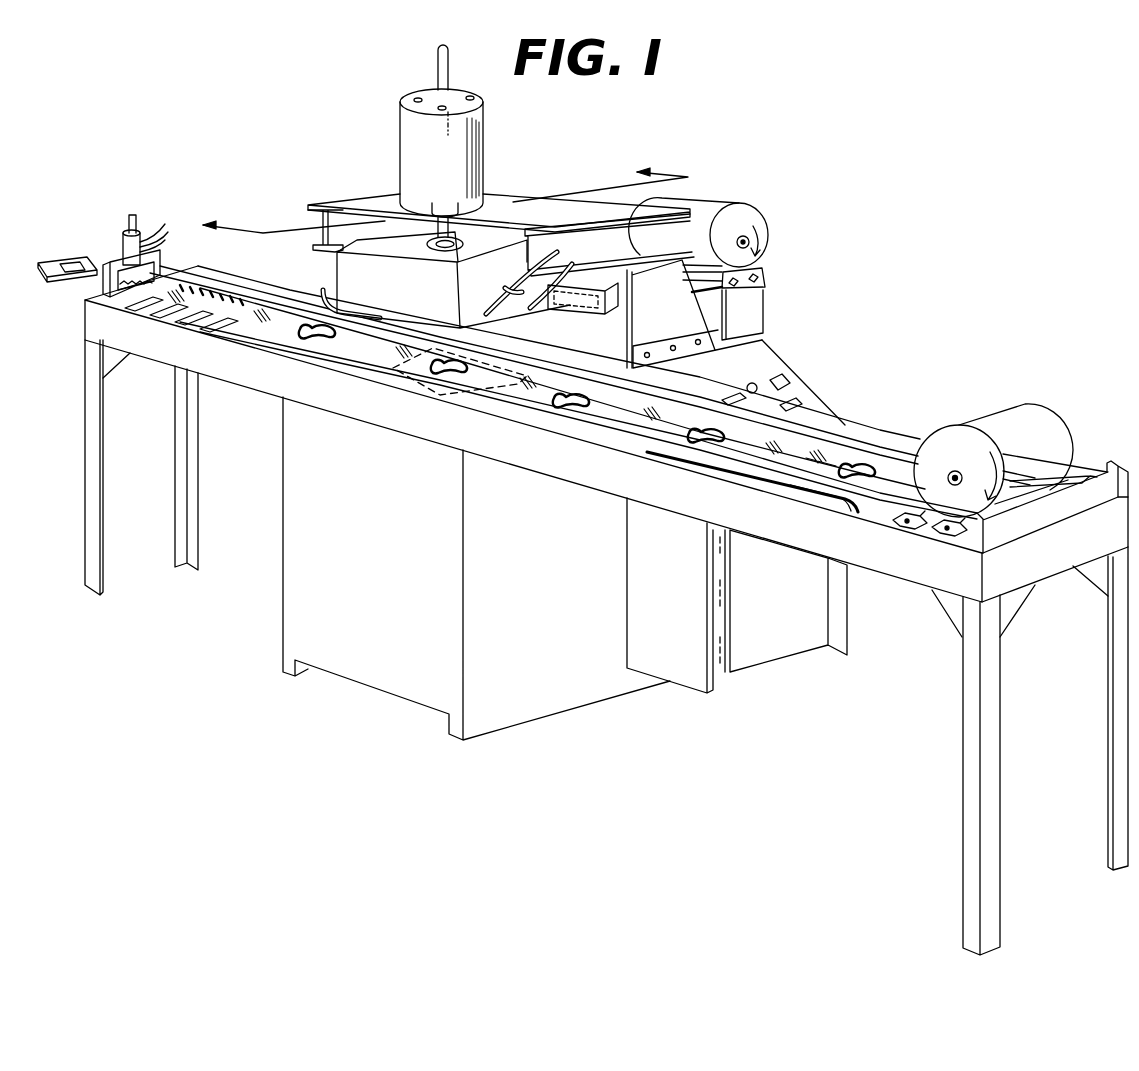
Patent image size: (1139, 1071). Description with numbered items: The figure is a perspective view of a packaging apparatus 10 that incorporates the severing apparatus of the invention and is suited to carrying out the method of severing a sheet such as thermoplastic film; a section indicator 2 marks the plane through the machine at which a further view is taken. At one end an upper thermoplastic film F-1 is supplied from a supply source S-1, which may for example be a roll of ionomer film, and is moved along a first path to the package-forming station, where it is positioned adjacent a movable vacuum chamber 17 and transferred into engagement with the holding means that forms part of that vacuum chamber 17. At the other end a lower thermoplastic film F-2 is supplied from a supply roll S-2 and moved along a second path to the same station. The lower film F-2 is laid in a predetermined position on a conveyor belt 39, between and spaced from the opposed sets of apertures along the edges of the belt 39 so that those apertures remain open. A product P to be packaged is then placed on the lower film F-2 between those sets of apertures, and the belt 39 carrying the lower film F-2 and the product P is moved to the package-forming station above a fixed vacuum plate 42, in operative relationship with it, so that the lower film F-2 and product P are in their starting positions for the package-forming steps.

The apparatus 10 is at (583, 162).
The section line 2- 2 is at (436, 198).
The movable vacuum chamber 17 is at (410, 297).
The conveyor belt 39 is at (800, 476).
The fixed vacuum plate 42 is at (393, 370).
The supply source S-1 is at (712, 212).
The supply roll S-2 is at (1037, 428).
The upper thermoplastic film F-1 is at (766, 277).
The lower thermoplastic film F-2 is at (830, 457).
The product P is at (877, 468).